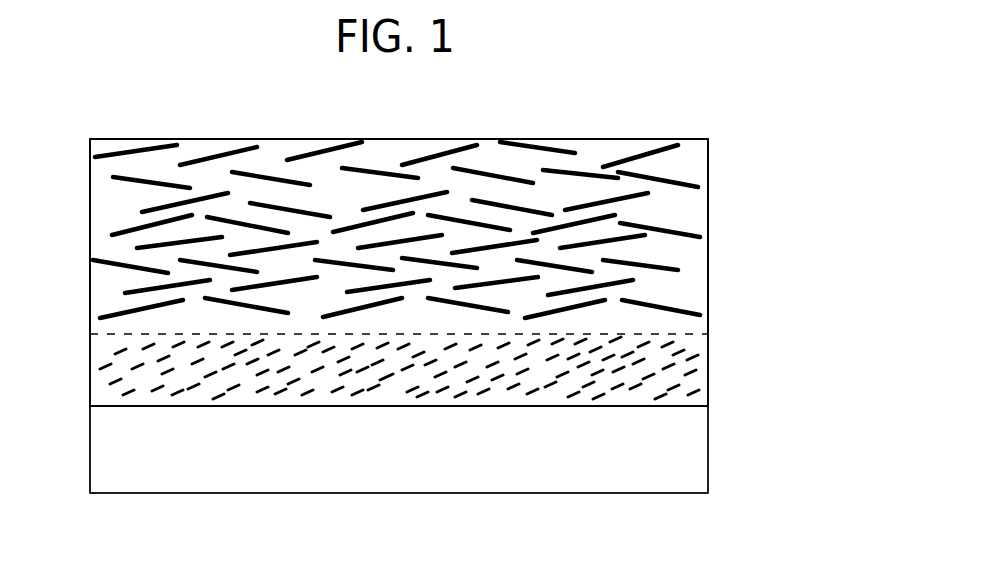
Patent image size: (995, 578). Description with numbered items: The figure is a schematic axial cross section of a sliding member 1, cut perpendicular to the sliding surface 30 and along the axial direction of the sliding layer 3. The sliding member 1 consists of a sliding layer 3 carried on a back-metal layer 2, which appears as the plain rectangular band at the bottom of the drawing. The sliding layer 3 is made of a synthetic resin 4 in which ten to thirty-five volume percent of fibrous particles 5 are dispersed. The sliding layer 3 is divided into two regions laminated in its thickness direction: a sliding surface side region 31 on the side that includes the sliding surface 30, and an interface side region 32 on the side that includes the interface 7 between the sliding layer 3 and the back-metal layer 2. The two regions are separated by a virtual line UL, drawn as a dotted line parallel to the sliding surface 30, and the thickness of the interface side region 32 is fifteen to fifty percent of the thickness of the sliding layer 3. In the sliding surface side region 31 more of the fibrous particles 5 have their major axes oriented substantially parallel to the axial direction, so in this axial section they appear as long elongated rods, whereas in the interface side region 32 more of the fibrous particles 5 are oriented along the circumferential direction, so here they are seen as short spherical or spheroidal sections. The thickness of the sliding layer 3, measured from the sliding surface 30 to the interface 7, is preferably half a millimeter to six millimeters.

The sliding member 1 is at (716, 130).
The back-metal layer 2 is at (712, 456).
The sliding layer 3 is at (712, 262).
The synthetic resin 4 is at (268, 157).
The fibrous particles 5 is at (443, 152).
The interface 7 is at (667, 407).
The sliding surface 30 is at (567, 139).
The sliding surface side region 31 is at (82, 140).
The interface side region 32 is at (82, 337).
The virtual line UL is at (665, 334).